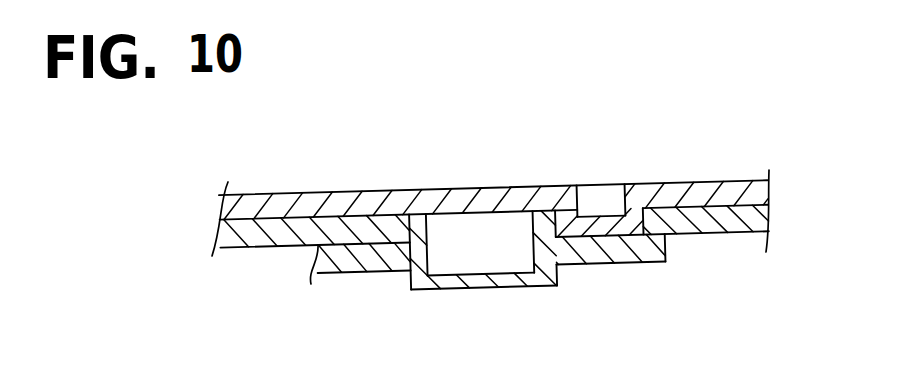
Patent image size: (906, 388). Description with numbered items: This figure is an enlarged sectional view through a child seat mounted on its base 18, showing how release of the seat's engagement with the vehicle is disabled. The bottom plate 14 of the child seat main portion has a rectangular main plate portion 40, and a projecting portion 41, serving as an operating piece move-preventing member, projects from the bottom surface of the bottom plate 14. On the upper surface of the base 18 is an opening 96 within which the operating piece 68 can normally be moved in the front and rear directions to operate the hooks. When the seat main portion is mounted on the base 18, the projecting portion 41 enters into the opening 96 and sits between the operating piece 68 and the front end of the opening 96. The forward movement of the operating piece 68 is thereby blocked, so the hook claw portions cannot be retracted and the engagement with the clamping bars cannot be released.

The bottom plate 14 is at (698, 182).
The base 18 is at (710, 236).
The main plate portion 40 is at (327, 192).
The projecting portion 41 is at (594, 216).
The operating piece 68 is at (533, 228).
The opening 96 is at (628, 238).